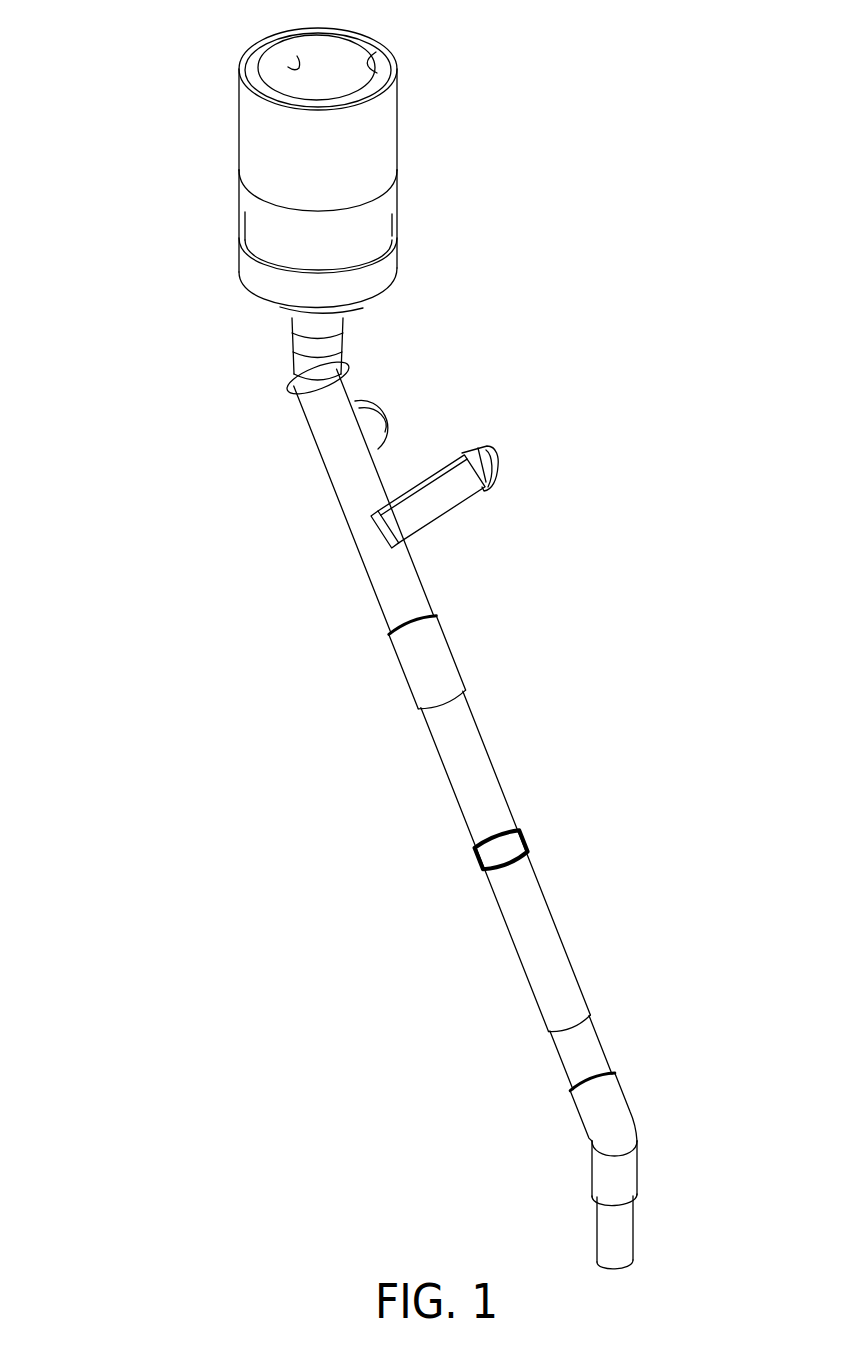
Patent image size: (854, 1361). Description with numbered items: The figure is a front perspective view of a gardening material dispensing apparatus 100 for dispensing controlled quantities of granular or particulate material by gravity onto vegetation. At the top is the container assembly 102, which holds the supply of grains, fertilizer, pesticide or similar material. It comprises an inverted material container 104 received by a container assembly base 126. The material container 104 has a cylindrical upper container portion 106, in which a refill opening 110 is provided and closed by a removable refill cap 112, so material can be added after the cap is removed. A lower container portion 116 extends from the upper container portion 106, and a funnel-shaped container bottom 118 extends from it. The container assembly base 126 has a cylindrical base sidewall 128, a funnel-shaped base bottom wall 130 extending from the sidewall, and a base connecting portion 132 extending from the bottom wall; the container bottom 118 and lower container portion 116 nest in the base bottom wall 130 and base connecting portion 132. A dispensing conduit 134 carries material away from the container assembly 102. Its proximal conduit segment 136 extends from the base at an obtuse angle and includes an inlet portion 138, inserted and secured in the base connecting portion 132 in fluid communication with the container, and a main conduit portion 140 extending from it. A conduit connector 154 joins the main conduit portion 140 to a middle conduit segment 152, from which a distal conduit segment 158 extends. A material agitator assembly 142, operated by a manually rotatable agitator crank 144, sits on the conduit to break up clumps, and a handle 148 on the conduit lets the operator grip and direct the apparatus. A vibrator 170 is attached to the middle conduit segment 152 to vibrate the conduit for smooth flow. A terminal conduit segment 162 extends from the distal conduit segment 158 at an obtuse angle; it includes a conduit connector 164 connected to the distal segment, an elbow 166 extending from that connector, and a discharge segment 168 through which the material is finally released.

The dispensing apparatus 100 is at (162, 52).
The container assembly 102 is at (407, 132).
The material container 104 is at (232, 122).
The upper container portion 106 is at (375, 167).
The refill opening 110 is at (356, 56).
The refill cap 112 is at (297, 56).
The lower container portion 116 is at (402, 198).
The container bottom 118 is at (272, 222).
The container assembly base 126 is at (250, 298).
The base sidewall 128 is at (383, 263).
The base bottom wall 130 is at (368, 310).
The base connecting portion 132 is at (291, 338).
The dispensing conduit 134 is at (546, 779).
The proximal conduit segment 136 is at (343, 524).
The inlet portion 138 is at (293, 361).
The main conduit portion 140 is at (418, 595).
The material agitator assembly 142 is at (405, 437).
The agitator crank 144 is at (390, 415).
The handle 148 is at (441, 490).
The middle conduit segment 152 is at (467, 776).
The conduit connector 154 is at (422, 667).
The distal conduit segment 158 is at (575, 1047).
The terminal conduit segment 162 is at (586, 1183).
The conduit connector 164 is at (612, 1112).
The elbow 166 is at (638, 1138).
The discharge segment 168 is at (620, 1235).
The vibrator 170 is at (478, 866).